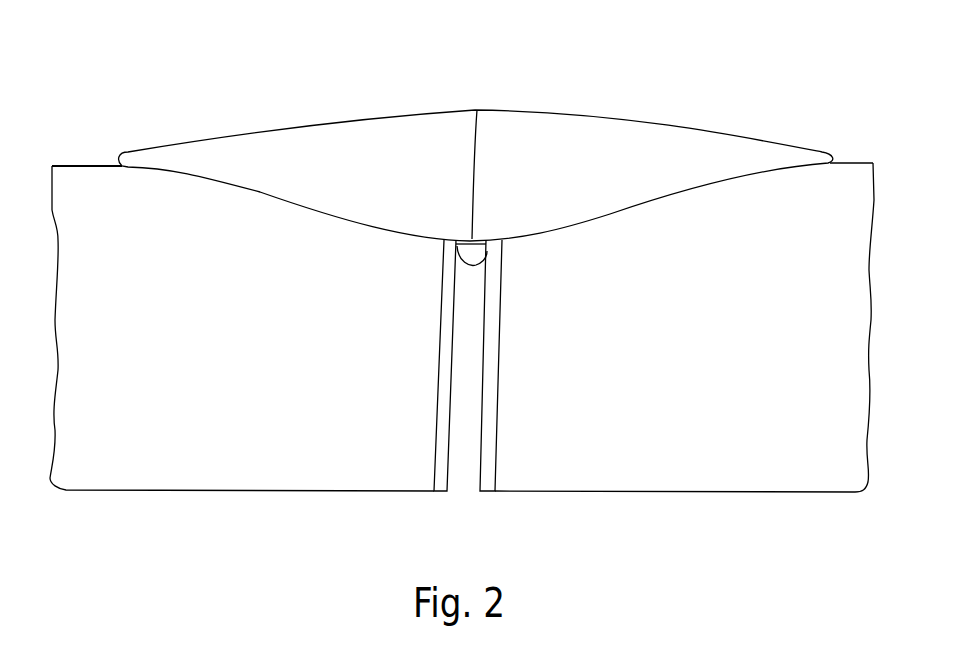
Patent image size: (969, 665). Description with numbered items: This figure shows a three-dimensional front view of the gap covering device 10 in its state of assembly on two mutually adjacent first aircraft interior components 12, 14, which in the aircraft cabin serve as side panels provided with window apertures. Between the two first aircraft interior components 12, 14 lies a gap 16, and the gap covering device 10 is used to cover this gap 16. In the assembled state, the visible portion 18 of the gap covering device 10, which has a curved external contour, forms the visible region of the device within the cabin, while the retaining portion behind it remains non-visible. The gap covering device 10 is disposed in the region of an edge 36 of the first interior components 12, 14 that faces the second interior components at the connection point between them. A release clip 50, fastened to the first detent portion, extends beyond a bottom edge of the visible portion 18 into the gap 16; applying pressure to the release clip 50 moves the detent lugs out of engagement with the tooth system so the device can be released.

The gap covering device 10 is at (653, 93).
The first aircraft interior component 12 is at (377, 458).
The first aircraft interior component 14 is at (558, 458).
The gap 16 is at (465, 468).
The visible portion 18 is at (362, 138).
The edge 36 is at (78, 165).
The release clip 50 is at (480, 253).